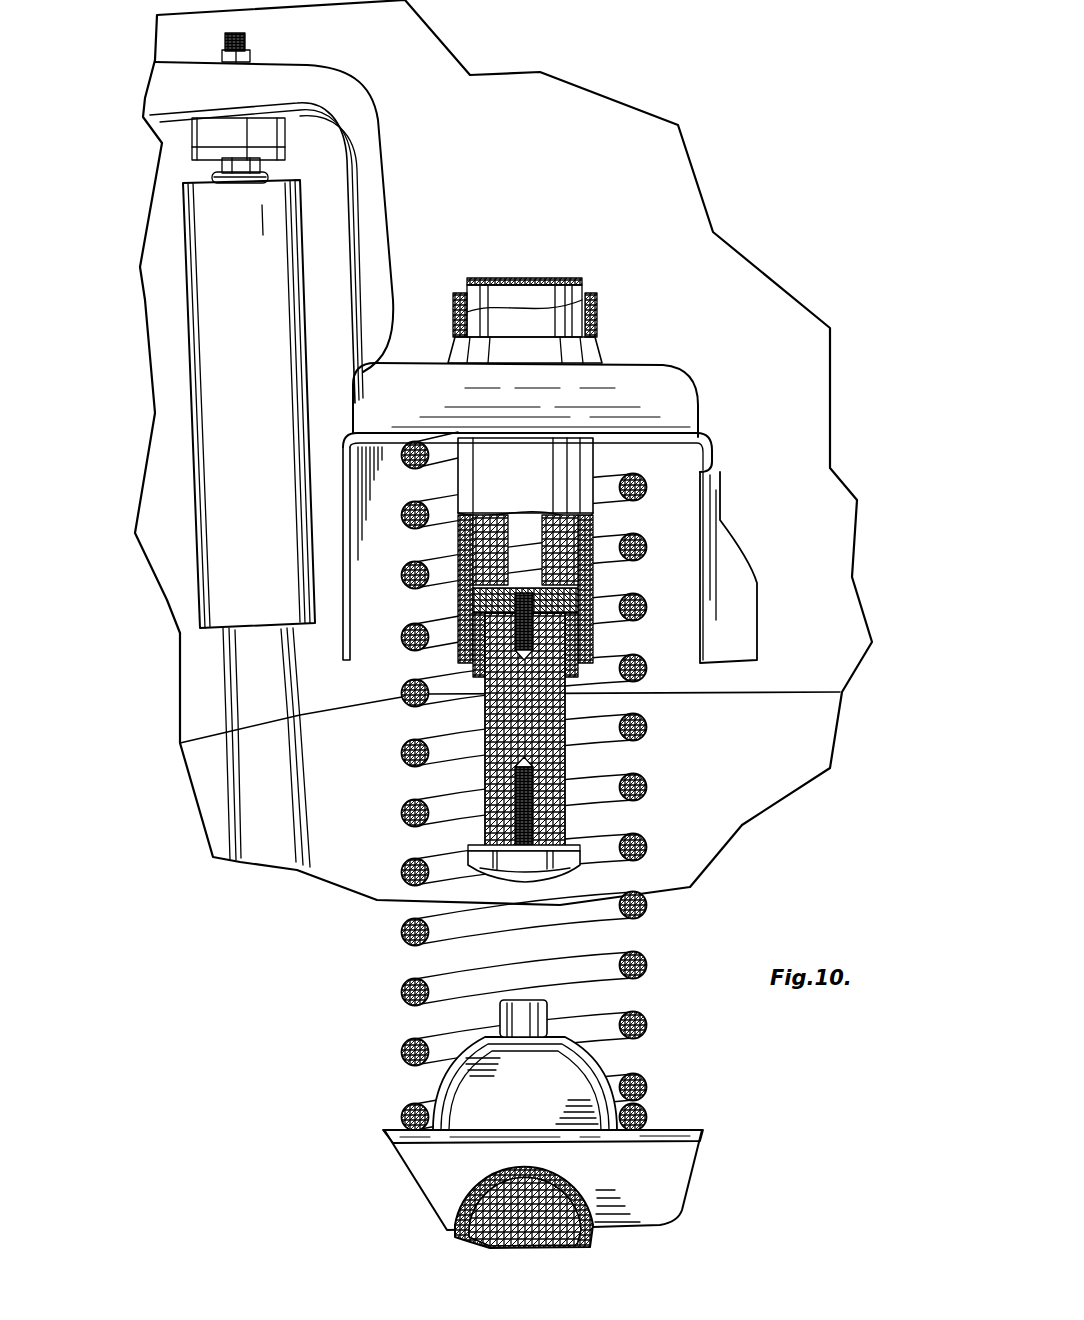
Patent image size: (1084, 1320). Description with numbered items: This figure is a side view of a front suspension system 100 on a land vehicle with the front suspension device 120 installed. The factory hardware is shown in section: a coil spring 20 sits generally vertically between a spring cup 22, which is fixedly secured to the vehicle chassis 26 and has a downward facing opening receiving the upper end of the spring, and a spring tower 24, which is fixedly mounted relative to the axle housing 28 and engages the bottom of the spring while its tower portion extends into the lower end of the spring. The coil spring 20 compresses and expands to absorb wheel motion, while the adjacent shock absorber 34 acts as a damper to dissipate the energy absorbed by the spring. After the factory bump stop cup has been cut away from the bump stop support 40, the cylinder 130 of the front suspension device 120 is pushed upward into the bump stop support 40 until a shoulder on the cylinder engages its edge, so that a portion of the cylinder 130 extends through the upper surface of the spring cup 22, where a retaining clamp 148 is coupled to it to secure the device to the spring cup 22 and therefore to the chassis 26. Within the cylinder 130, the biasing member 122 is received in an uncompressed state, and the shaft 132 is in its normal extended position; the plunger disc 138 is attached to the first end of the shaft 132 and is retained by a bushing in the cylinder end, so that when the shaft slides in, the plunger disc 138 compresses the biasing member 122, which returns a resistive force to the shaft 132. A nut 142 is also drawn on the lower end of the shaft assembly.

The coil spring 20 is at (647, 965).
The spring cup 22 is at (678, 375).
The spring tower 24 is at (617, 1058).
The vehicle chassis 26 is at (682, 184).
The axle housing 28 is at (457, 1227).
The shock absorber 34 is at (188, 386).
The bump stop support 40 is at (702, 466).
The front suspension system 100 is at (370, 928).
The front suspension device 120 is at (438, 718).
The biasing member 122 is at (588, 572).
The cylinder 130 is at (458, 655).
The shaft 132 is at (568, 777).
The plunger disc 138 is at (593, 640).
The nut 142 is at (537, 878).
The retaining clamp 148 is at (598, 305).